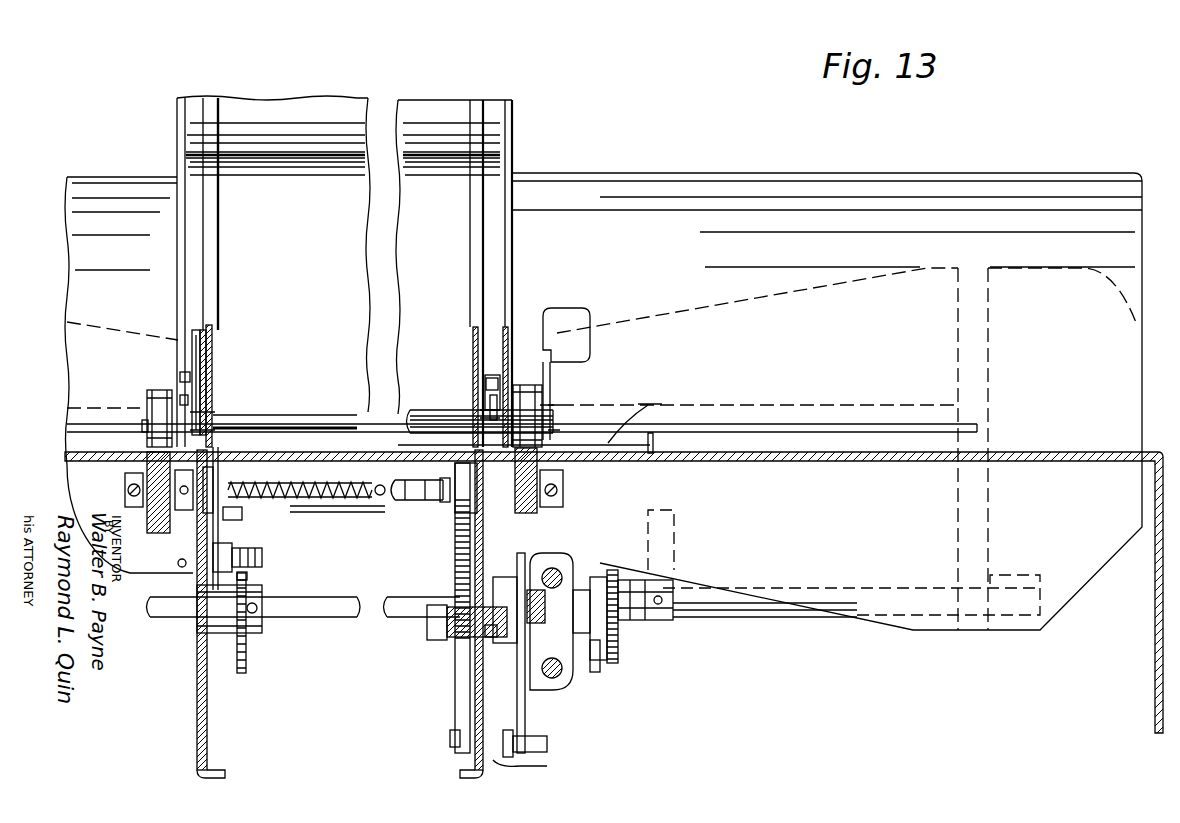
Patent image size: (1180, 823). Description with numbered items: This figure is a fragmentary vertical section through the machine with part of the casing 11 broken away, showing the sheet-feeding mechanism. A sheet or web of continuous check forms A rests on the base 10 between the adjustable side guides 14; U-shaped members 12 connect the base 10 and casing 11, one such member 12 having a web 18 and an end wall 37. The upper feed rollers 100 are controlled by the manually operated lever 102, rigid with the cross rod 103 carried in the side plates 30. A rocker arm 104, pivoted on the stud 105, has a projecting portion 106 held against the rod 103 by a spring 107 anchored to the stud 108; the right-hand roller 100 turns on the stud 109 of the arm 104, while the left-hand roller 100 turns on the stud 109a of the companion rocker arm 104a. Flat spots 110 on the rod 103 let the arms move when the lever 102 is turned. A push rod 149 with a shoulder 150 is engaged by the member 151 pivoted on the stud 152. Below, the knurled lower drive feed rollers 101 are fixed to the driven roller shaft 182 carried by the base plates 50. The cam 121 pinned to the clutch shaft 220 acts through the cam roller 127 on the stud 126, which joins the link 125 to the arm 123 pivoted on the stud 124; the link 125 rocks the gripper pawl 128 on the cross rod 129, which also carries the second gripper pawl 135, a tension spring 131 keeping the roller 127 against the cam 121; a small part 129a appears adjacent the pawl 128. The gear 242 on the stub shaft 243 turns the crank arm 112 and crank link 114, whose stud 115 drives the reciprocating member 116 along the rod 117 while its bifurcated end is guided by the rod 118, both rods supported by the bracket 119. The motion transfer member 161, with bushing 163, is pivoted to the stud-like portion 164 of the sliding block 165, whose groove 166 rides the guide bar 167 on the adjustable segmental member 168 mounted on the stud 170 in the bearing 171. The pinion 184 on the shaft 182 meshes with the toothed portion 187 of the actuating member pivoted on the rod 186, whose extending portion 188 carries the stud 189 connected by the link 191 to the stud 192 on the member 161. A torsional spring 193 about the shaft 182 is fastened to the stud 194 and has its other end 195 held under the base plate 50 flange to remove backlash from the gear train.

The base 10 is at (1047, 452).
The casing 11 is at (505, 132).
The U-shaped member 12 is at (1105, 300).
The adjustable side guides 14 is at (655, 445).
The web 18 is at (673, 628).
The side plates 30 is at (215, 330).
The end wall 37 is at (985, 515).
The base plate 50 is at (200, 719).
The upper feed rollers 100 is at (158, 390).
The lower drive feed rollers 101 is at (145, 466).
The manually operated lever 102 is at (566, 374).
The cross rod 103 is at (334, 420).
The rocker arm 104 is at (488, 392).
The rocker arm 104a is at (217, 424).
The stud 105 is at (485, 413).
The projecting portion 106 is at (407, 428).
The spring 107 is at (185, 380).
The stud 108 is at (490, 378).
The stud 109 is at (548, 410).
The stud 109a is at (145, 420).
The flat spots 110 is at (206, 422).
The crank arm 112 is at (600, 585).
The crank link 114 is at (598, 664).
The stud 115 is at (598, 600).
The reciprocating member 116 is at (553, 652).
The rod 117 is at (554, 570).
The rod 118 is at (555, 680).
The bracket 119 is at (500, 660).
The cam 121 is at (247, 673).
The arm 123 is at (222, 532).
The stud 124 is at (243, 512).
The link 125 is at (262, 552).
The stud 126 is at (262, 561).
The cam roller 127 is at (248, 577).
The gripper pawl 128 is at (147, 460).
The cross rod 129 is at (457, 500).
The pin 129a is at (178, 565).
The tension spring 131 is at (180, 545).
The second gripper pawl 135 is at (563, 488).
The push rod 149 is at (201, 345).
The shoulder 150 is at (196, 340).
The member 151 is at (201, 358).
The stud 152 is at (201, 372).
The motion transfer member 161 is at (524, 716).
The bushing 163 is at (545, 600).
The stud-like portion 164 is at (500, 577).
The sliding block 165 is at (503, 595).
The groove 166 is at (530, 631).
The guide bar 167 is at (490, 633).
The adjustable segmental member 168 is at (492, 640).
The stud 170 is at (450, 622).
The bearing 171 is at (455, 632).
The driven roller shaft 182 is at (400, 505).
The pinion 184 is at (458, 532).
The rod 186 is at (427, 627).
The extending toothed portion 187 is at (458, 550).
The extending portion 188 is at (460, 710).
The stud 189 is at (455, 739).
The link 191 is at (540, 765).
The stud 192 is at (547, 743).
The torsional spring 193 is at (397, 482).
The stud 194 is at (432, 510).
The spring end 195 is at (215, 469).
The clutch shaft 220 is at (295, 617).
The gear 242 is at (618, 656).
The stub shaft 243 is at (792, 612).
The check forms A is at (635, 411).